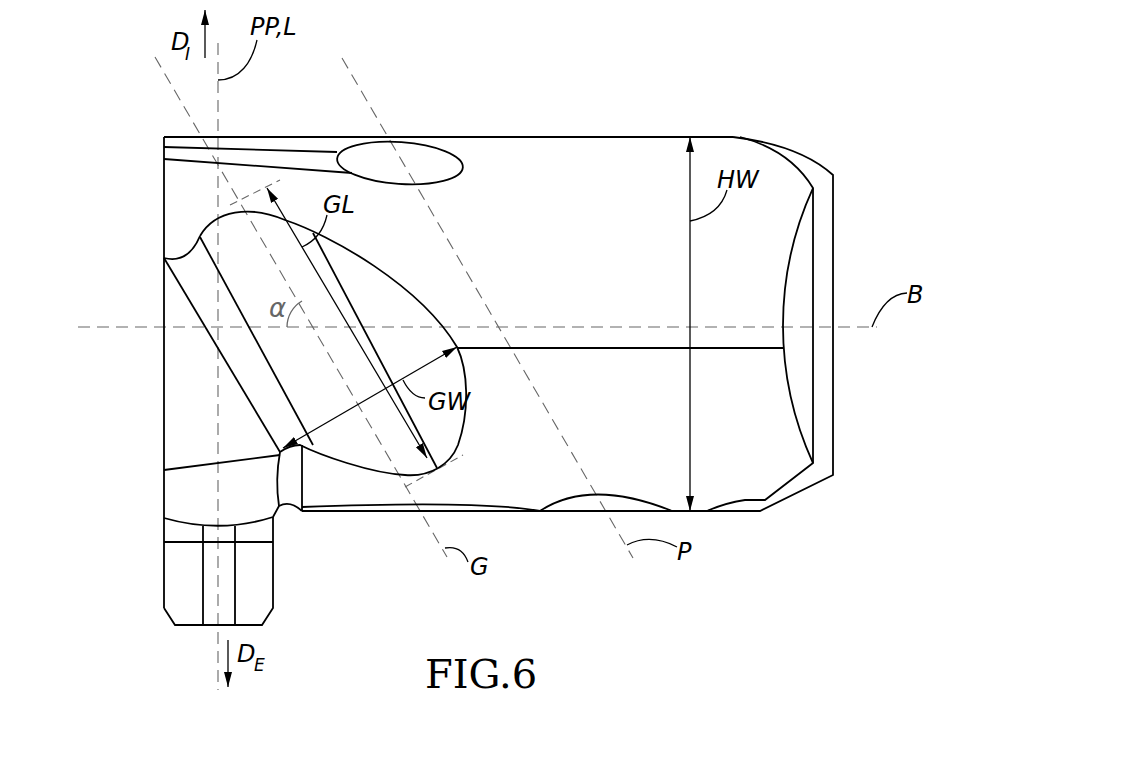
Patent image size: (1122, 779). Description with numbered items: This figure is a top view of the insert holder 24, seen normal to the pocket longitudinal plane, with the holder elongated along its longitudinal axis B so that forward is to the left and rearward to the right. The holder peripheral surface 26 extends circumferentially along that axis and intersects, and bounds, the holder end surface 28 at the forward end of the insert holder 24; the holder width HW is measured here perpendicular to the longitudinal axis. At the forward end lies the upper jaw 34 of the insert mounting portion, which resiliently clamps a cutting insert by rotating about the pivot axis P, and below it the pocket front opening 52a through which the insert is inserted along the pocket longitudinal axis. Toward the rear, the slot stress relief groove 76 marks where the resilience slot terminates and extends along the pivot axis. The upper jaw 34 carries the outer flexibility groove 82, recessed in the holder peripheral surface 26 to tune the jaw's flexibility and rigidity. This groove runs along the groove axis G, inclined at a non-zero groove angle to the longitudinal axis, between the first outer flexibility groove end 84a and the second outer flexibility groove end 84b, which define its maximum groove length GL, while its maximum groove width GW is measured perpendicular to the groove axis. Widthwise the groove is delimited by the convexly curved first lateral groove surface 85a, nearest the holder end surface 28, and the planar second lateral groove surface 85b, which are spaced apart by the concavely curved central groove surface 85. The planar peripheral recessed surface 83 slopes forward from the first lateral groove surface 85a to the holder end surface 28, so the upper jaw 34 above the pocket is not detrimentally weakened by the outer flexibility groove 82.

The insert holder 24 is at (810, 127).
The holder peripheral surface 26 is at (585, 163).
The holder end surface 28 is at (165, 378).
The upper jaw 34 is at (193, 353).
The pocket front opening 52a is at (185, 525).
The slot stress relief groove 76 is at (423, 165).
The outer flexibility groove 82 is at (378, 317).
The peripheral recessed surface 83 is at (215, 452).
The first outer flexibility groove end 84a is at (452, 437).
The second outer flexibility groove end 84b is at (232, 243).
The central groove surface 85 is at (333, 394).
The first lateral groove surface 85a is at (250, 378).
The second lateral groove surface 85b is at (421, 350).